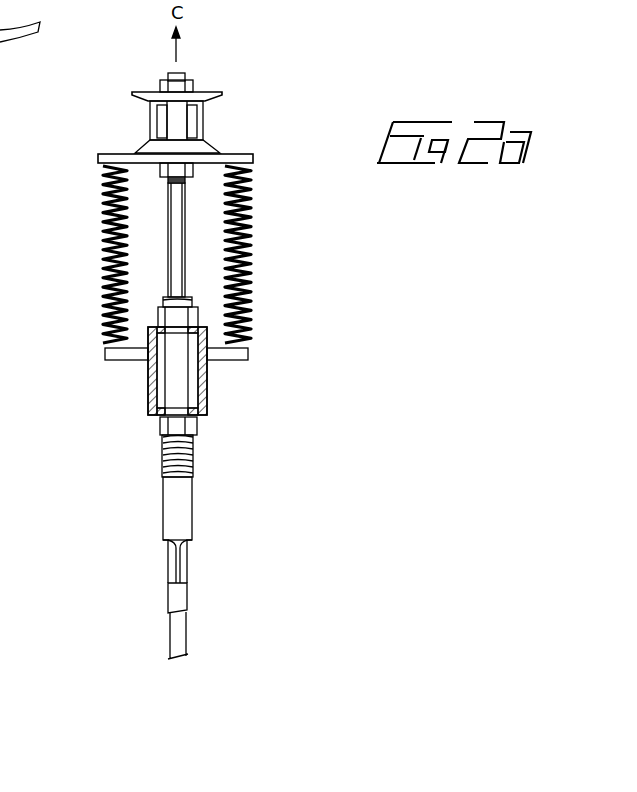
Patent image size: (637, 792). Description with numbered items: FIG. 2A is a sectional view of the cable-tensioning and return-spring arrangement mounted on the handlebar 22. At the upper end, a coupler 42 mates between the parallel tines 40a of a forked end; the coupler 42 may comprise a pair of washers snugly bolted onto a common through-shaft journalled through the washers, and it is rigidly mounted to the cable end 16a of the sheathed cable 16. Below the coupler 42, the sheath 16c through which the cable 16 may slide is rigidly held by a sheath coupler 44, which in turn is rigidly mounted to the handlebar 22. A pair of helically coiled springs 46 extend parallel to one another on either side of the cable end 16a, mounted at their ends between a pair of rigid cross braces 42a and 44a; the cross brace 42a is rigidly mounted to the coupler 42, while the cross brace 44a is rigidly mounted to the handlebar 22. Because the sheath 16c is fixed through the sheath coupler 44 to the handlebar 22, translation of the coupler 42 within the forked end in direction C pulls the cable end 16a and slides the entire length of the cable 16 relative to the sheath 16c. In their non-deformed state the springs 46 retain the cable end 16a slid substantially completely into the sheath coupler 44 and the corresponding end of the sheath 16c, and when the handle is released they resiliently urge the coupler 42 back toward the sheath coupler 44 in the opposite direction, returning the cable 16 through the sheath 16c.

The coupler 42 is at (223, 80).
The parallel tines 40a is at (148, 115).
The cross brace 42a is at (252, 155).
The cable end 16a is at (185, 207).
The helically coiled springs 46 is at (252, 265).
The handlebar 22 is at (207, 378).
The cross brace 44a is at (248, 352).
The sheath coupler 44 is at (202, 433).
The sheath 16c is at (188, 597).
The sheathed cable 16 is at (187, 640).